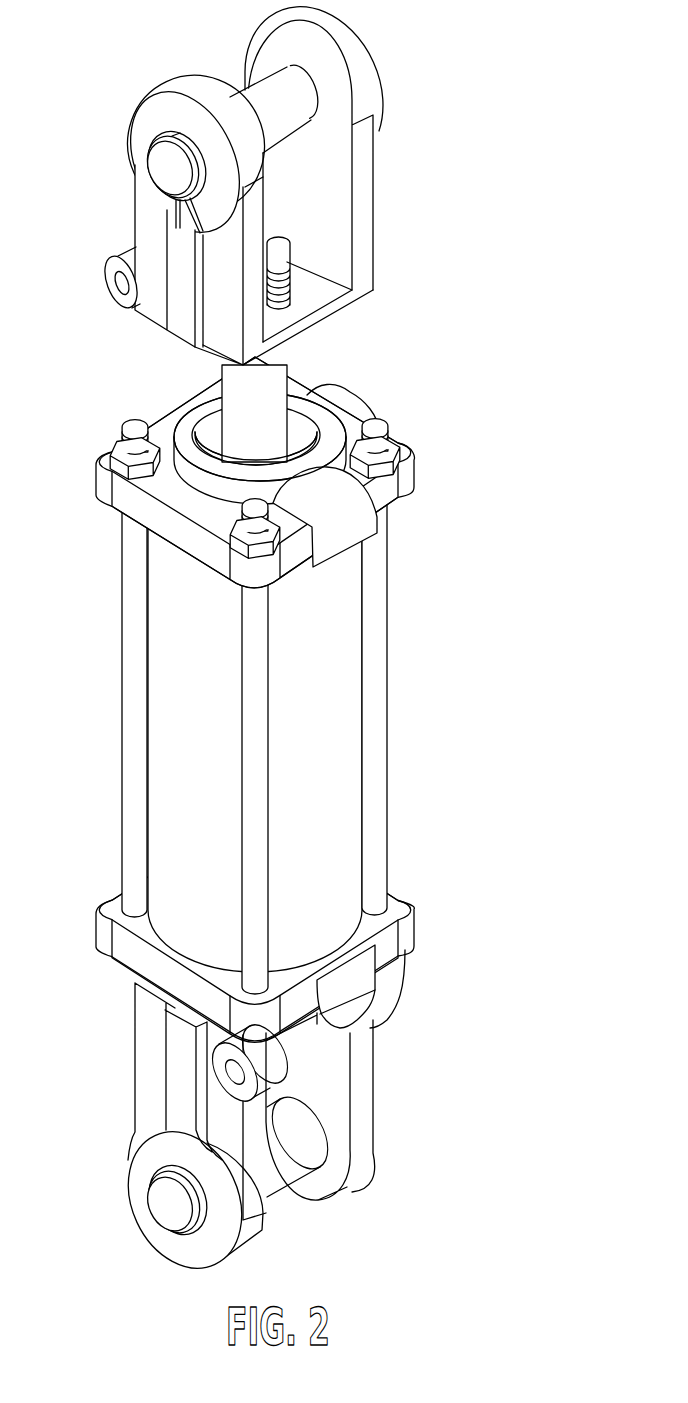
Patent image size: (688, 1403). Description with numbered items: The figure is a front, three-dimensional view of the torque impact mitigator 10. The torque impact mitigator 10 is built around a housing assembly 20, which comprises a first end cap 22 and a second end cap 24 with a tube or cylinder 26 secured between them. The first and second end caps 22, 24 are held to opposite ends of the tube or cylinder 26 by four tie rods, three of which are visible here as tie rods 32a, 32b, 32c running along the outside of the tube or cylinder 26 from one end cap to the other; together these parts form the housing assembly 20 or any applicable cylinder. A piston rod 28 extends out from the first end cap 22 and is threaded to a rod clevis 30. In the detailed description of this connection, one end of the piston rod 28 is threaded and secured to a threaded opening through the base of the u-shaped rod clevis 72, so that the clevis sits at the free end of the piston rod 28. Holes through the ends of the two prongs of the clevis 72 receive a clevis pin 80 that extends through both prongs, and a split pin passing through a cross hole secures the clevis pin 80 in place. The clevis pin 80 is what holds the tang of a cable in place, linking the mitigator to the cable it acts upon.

The torque impact mitigator 10 is at (468, 656).
The housing assembly 20 is at (442, 824).
The first end cap 22 is at (392, 502).
The second end cap 24 is at (390, 950).
The tube or cylinder 26 is at (177, 717).
The piston rod 28 is at (275, 383).
The rod clevis 30 is at (363, 188).
The tie rod 32a is at (373, 772).
The tie rod 32b is at (253, 852).
The tie rod 32c is at (133, 812).
The u-shaped rod clevis 72 is at (363, 240).
The clevis pin 80 is at (263, 110).